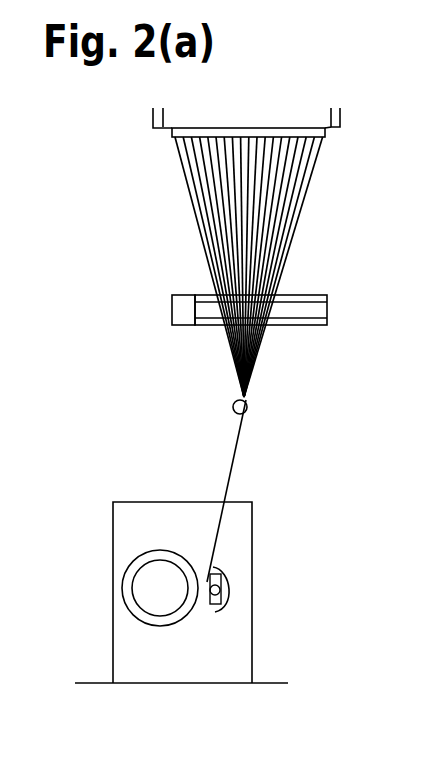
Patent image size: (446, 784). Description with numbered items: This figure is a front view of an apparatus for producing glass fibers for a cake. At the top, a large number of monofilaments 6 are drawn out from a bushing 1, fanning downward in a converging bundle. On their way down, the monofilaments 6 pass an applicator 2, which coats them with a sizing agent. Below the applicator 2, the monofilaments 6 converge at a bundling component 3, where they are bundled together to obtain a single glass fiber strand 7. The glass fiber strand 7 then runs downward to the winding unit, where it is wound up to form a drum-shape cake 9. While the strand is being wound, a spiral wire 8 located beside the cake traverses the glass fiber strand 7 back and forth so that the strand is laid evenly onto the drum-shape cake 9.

The bushing 1 is at (325, 132).
The monofilaments 6 is at (303, 218).
The applicator 2 is at (327, 305).
The bundling component 3 is at (233, 406).
The glass fiber strand 7 is at (242, 446).
The spiral wire 8 is at (223, 574).
The drum-shape cake 9 is at (146, 554).